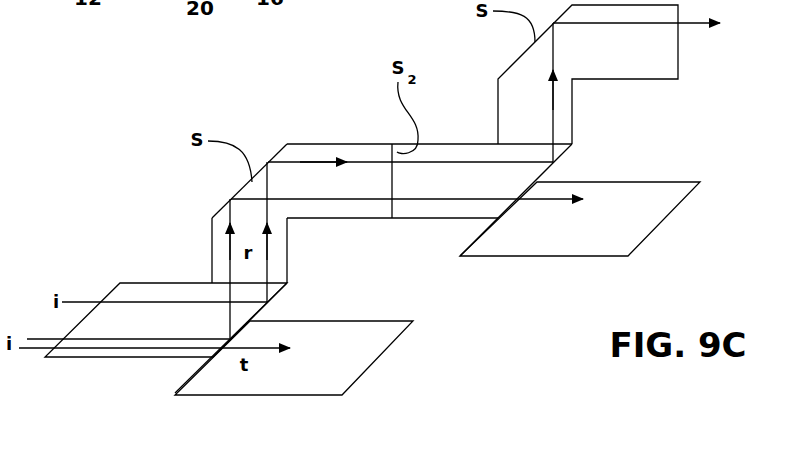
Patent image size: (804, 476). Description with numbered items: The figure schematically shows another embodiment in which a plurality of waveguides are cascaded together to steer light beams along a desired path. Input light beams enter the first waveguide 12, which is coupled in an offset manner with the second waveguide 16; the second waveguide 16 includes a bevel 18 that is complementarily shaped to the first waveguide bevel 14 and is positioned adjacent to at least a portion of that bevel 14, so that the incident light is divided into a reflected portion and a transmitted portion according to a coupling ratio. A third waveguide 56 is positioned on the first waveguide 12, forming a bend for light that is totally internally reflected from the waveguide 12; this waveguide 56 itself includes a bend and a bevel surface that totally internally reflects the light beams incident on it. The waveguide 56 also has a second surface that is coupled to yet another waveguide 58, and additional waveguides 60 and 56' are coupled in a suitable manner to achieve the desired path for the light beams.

The first waveguide 12 is at (143, 292).
The first waveguide bevel 14 is at (280, 288).
The second waveguide 16 is at (335, 367).
The second waveguide bevel 18 is at (185, 380).
The third waveguide 56 is at (420, 201).
The additional waveguide 56' is at (609, 84).
The fourth waveguide 58 is at (437, 210).
The additional waveguide 60 is at (574, 233).